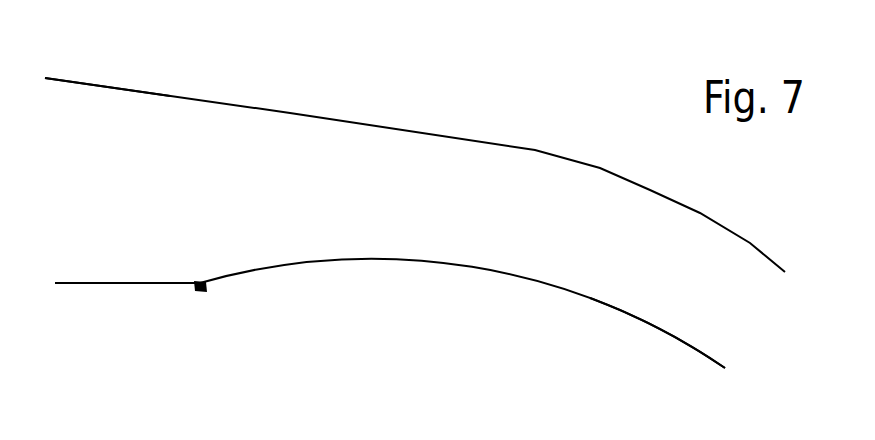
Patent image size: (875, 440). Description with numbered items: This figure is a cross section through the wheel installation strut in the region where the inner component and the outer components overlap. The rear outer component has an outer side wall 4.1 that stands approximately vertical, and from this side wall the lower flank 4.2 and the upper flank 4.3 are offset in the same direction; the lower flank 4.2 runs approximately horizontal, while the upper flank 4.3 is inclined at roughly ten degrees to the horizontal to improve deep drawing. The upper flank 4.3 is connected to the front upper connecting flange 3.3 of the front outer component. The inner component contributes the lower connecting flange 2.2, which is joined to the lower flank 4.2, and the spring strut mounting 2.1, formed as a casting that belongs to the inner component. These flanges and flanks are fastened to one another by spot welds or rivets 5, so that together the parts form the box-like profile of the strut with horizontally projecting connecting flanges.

The upper flank 4.3 is at (97, 84).
The front upper connecting flange 3.3 is at (535, 150).
The spring strut mounting 2.1 is at (340, 262).
The lower connecting flange 2.2 is at (658, 333).
The spot welds or rivets 5 is at (200, 290).
The lower flank 4.2 is at (68, 285).
The outer side wall 4.1 is at (520, 436).